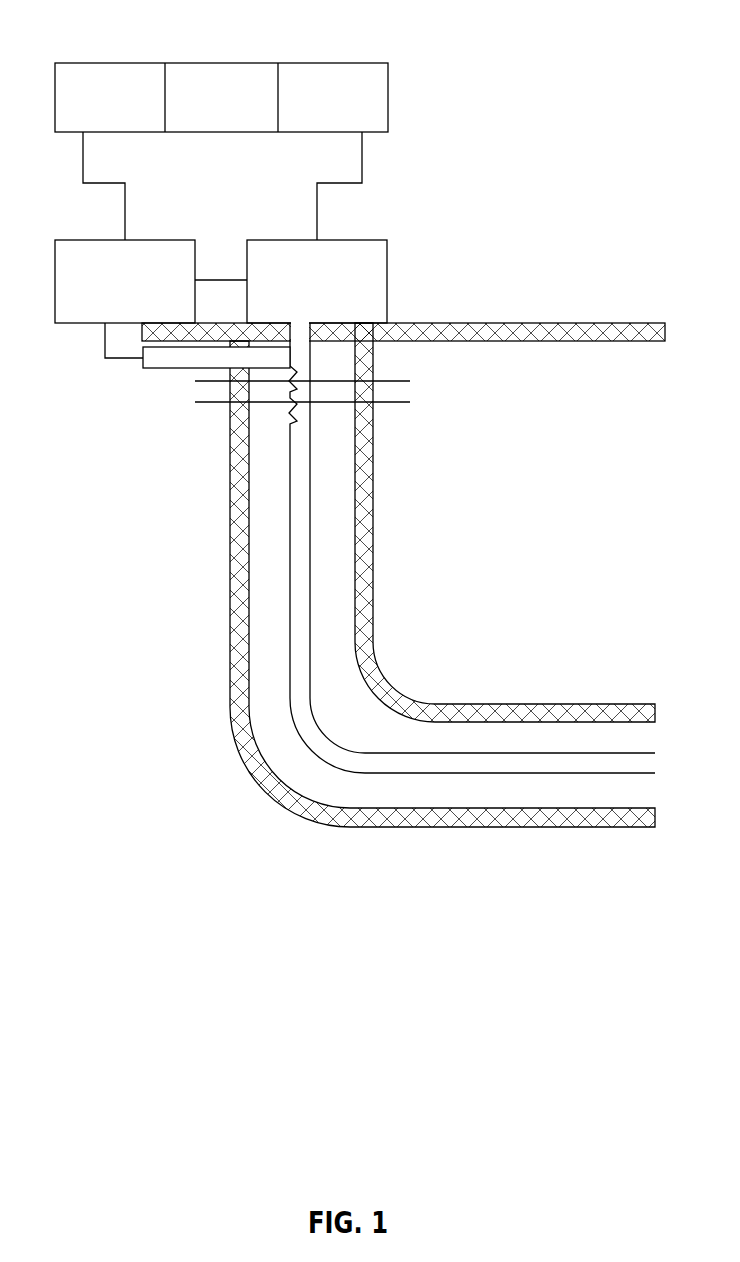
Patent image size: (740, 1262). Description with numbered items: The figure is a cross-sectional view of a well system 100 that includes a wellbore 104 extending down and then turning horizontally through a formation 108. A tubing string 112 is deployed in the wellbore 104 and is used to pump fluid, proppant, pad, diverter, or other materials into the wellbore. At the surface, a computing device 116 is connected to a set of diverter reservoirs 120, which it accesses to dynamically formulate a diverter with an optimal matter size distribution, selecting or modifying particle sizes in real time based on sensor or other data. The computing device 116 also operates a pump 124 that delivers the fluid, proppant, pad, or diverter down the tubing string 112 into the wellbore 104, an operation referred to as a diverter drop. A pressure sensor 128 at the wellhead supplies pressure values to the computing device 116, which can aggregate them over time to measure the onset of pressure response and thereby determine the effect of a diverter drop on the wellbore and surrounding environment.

The well system 100 is at (528, 68).
The wellbore 104 is at (350, 464).
The formation 108 is at (538, 323).
The tubing string 112 is at (311, 528).
The computing device 116 is at (162, 240).
The diverter reservoirs 120 is at (371, 63).
The pump 124 is at (388, 276).
The pressure sensor 128 is at (160, 368).